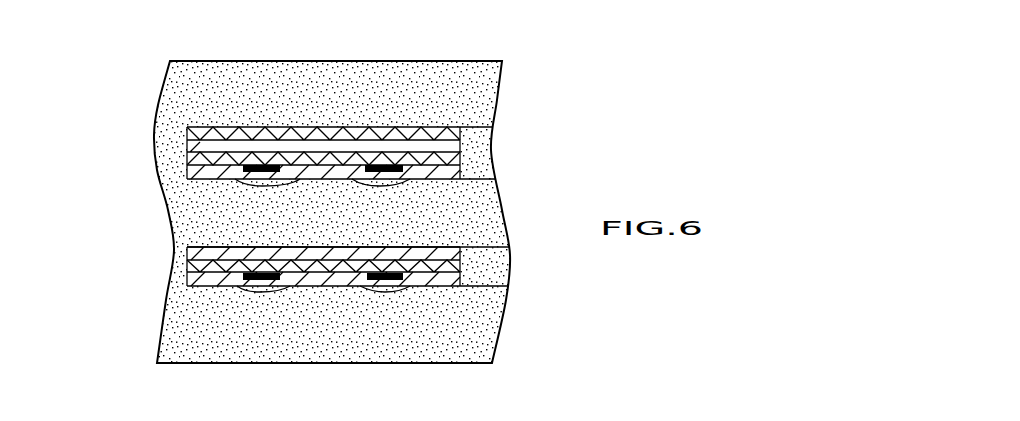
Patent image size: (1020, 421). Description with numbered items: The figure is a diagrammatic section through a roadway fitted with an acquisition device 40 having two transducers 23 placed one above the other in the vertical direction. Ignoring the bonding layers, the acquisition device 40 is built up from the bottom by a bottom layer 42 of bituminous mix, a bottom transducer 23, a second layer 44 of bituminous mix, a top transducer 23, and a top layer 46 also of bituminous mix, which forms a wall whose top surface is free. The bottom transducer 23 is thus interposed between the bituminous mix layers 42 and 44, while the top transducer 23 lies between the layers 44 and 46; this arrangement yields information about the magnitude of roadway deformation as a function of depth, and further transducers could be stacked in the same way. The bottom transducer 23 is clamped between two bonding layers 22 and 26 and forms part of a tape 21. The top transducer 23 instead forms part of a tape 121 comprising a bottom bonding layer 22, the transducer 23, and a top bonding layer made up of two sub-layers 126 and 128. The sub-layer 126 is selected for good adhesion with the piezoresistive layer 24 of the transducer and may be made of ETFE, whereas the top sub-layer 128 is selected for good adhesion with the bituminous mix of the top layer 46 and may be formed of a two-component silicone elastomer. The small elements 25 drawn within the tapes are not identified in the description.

The acquisition device 40 is at (127, 85).
The top layer 46 is at (222, 77).
The second layer 44 is at (193, 213).
The bottom layer 42 is at (477, 325).
The tape 121 is at (458, 118).
The top sub-layer 128 is at (462, 130).
The sub-layer 126 is at (187, 147).
The transducer 23 is at (478, 151).
The piezoresistive layer 24 is at (455, 157).
The bonding layer 22 is at (200, 170).
The bonding layer 26 is at (187, 253).
The tape 21 is at (472, 240).
The electronic component / chip 25 is at (383, 165).